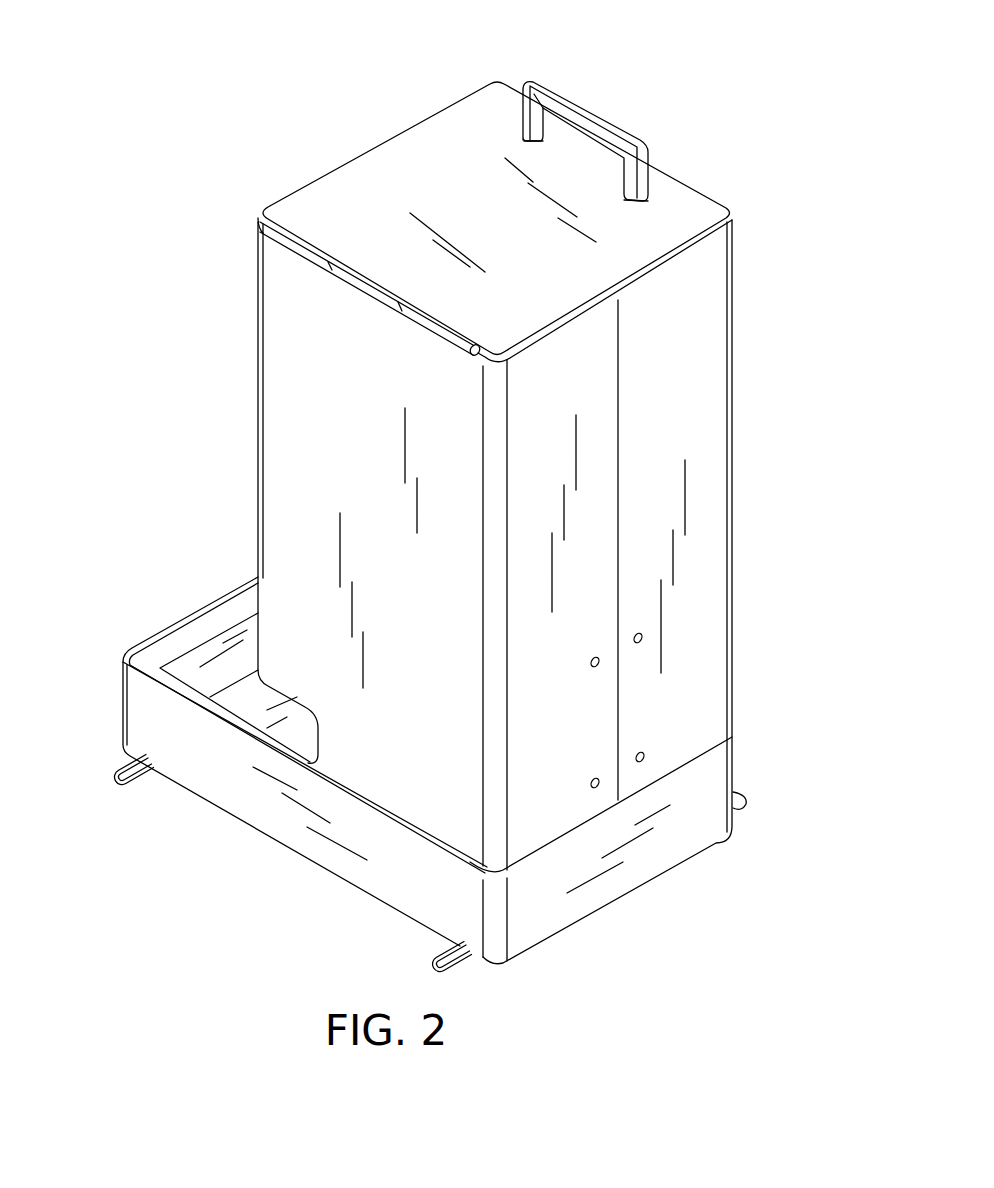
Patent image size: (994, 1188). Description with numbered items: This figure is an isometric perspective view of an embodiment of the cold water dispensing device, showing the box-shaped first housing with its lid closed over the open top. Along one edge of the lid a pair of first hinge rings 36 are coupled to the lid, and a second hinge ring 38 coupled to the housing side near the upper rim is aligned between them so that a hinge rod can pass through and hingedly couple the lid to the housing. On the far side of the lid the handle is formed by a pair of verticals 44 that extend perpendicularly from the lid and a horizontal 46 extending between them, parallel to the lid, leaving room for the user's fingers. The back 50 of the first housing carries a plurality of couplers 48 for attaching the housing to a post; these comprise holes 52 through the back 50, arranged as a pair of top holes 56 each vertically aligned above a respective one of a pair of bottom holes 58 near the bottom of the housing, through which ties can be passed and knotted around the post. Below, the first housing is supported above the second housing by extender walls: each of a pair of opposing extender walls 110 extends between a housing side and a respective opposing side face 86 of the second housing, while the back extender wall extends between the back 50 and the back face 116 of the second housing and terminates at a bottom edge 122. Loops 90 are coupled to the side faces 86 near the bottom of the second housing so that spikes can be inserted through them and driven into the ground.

The first hinge rings 36 is at (433, 333).
The second hinge ring 38 is at (368, 285).
The verticals 44 is at (632, 189).
The horizontal 46 is at (595, 90).
The couplers 48 is at (588, 687).
The back 50 is at (712, 321).
The holes 52 is at (658, 742).
The top holes 56 is at (605, 642).
The bottom holes 58 is at (645, 780).
The opposing side face 86 is at (242, 800).
The loops 90 is at (418, 964).
The opposing extender walls 110 is at (398, 780).
The back face 116 is at (602, 875).
The bottom edge 122 is at (556, 860).